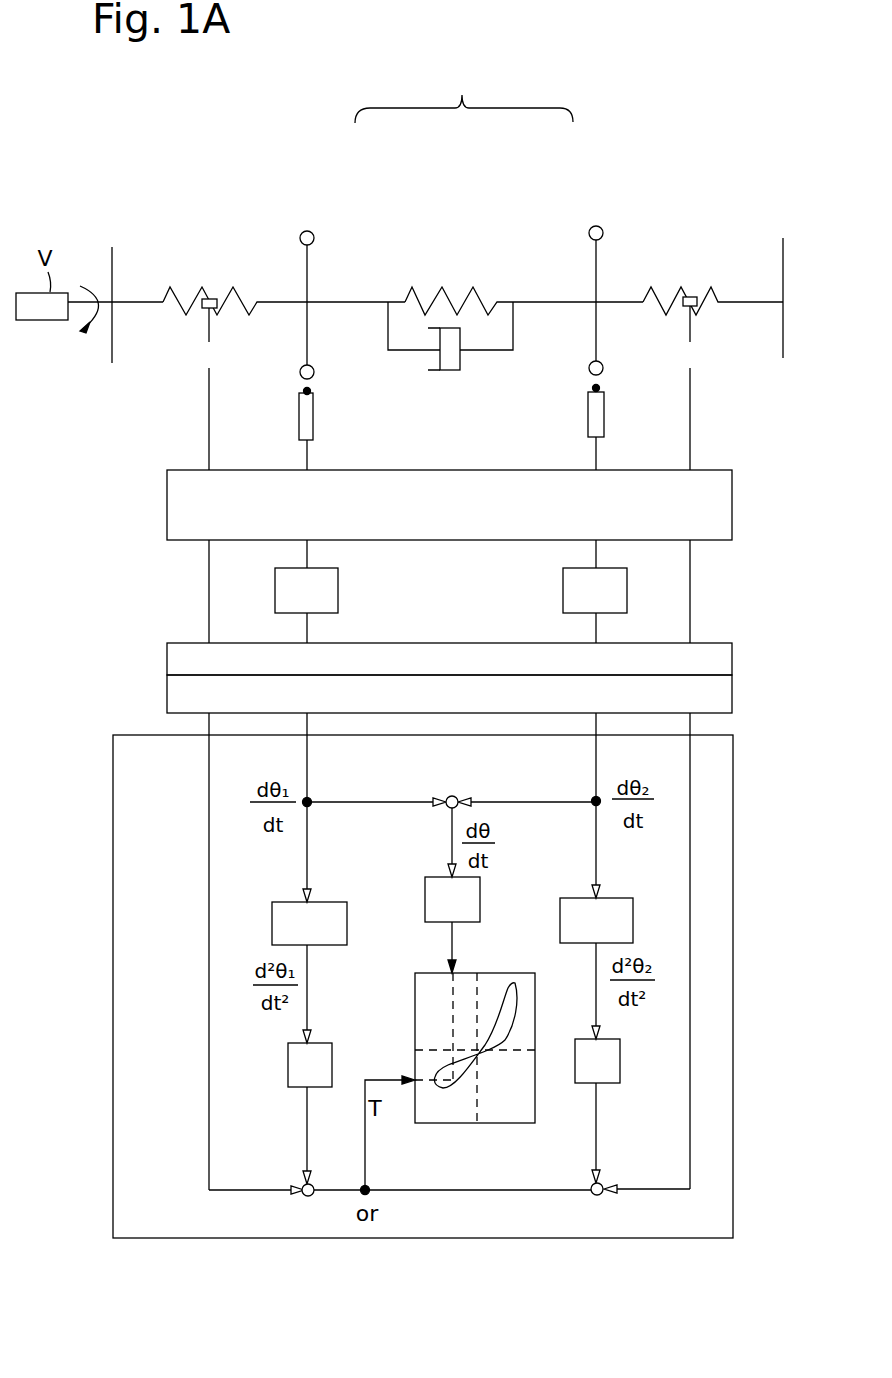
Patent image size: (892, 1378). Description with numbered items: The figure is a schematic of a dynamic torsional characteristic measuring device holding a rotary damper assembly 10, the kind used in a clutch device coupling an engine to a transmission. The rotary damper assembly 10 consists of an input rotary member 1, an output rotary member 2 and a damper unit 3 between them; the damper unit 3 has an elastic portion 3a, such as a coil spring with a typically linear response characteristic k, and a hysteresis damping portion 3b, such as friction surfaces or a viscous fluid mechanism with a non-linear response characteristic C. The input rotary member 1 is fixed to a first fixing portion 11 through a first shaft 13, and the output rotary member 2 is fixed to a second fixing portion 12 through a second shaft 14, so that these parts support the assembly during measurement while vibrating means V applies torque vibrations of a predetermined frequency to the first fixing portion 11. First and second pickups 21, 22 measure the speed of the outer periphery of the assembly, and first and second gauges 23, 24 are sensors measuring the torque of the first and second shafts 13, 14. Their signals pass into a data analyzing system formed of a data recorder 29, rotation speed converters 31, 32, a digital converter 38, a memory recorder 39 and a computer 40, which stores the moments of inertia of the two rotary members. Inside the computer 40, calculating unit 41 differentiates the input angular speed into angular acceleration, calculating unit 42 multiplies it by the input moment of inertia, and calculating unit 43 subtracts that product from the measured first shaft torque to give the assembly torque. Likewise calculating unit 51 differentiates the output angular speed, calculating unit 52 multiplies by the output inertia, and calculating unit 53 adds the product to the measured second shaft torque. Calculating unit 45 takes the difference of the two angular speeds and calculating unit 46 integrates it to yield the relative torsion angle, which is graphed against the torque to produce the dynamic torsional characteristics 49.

The input rotary member 1 is at (325, 205).
The output rotary member 2 is at (588, 198).
The damper unit 3 is at (515, 265).
The elastic portion 3a is at (498, 278).
The hysteresis damping portion 3b is at (477, 367).
The rotary damper assembly 10 is at (464, 92).
The first fixing portion 11 is at (118, 267).
The second fixing portion 12 is at (772, 240).
The first shaft 13 is at (186, 232).
The second shaft 14 is at (668, 222).
The first pickup 21 is at (322, 418).
The second pickup 22 is at (612, 416).
The first gauge 23 is at (218, 288).
The second gauge 24 is at (698, 285).
The data recorder 29 is at (735, 488).
The rotation speed converter 31 is at (346, 592).
The rotation speed converter 32 is at (633, 591).
The digital converter 38 is at (735, 650).
The memory recorder 39 is at (735, 702).
The computer 40 is at (745, 880).
The calculating unit 41 is at (318, 900).
The calculating unit 42 is at (334, 1068).
The calculating unit 43 is at (305, 1197).
The calculating unit 45 is at (458, 795).
The calculating unit 46 is at (484, 895).
The dynamic torsional characteristics 49 is at (445, 1124).
The calculating unit 51 is at (614, 896).
The calculating unit 52 is at (623, 1065).
The calculating unit 53 is at (593, 1196).